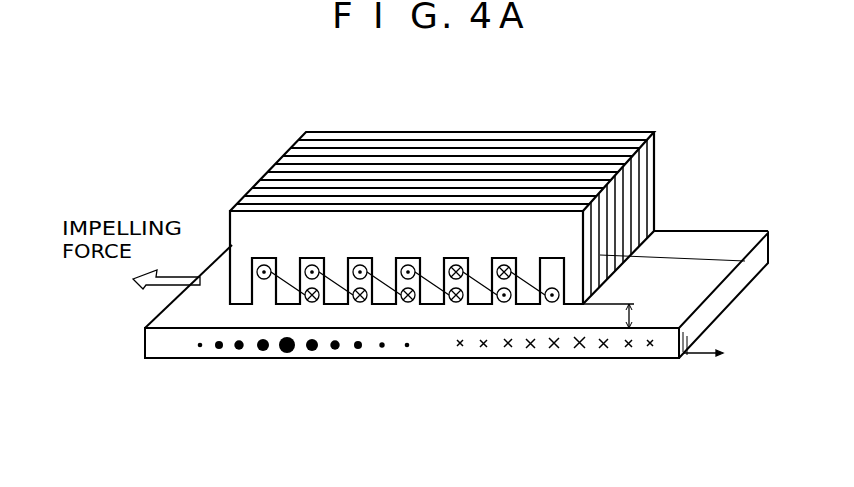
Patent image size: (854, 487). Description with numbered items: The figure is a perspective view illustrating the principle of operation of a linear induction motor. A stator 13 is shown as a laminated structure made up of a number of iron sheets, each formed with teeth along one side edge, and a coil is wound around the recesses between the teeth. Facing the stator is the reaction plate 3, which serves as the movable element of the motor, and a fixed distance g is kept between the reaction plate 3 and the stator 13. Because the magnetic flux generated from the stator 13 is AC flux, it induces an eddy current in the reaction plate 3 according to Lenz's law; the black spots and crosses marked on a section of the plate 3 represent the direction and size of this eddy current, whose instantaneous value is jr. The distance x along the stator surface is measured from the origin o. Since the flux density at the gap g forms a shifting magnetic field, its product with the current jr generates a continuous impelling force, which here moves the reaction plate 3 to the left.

The reaction plate 3 is at (718, 243).
The stator 13 is at (642, 179).
The instantaneous value of the eddy current jr is at (263, 351).
The origin of x axis o is at (409, 371).
The distance on the surface of stator x is at (711, 354).
The fixed distance g is at (616, 315).